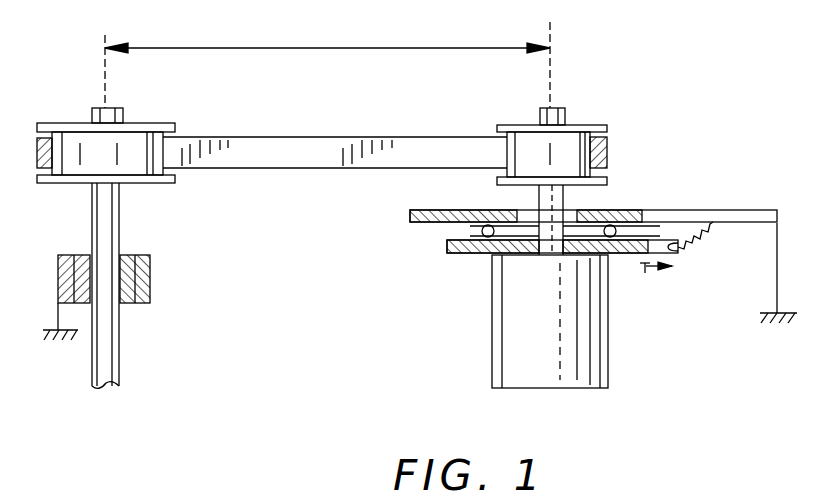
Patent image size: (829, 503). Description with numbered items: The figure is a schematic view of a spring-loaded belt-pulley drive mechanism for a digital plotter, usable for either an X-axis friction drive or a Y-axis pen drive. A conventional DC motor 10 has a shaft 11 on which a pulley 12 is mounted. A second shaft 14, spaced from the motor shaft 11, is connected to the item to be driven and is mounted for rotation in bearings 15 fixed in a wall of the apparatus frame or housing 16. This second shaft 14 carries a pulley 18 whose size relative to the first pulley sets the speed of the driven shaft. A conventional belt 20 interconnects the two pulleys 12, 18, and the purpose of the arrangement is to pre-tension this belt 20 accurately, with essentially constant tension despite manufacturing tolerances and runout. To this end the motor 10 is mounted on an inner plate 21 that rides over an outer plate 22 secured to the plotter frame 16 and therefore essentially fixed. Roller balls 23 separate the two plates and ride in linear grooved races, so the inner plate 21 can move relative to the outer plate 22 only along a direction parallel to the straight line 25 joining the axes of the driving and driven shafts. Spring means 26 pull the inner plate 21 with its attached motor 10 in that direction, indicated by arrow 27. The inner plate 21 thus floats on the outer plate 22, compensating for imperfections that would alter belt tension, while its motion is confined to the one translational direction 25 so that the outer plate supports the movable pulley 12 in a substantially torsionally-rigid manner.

The DC motor 10 is at (551, 350).
The motor shaft 11 is at (565, 197).
The pulley 12 is at (578, 125).
The second shaft 14 is at (120, 215).
The bearings 15 is at (150, 283).
The frame 16 is at (54, 333).
The pulley 18 is at (163, 125).
The belt 20 is at (343, 136).
The inner plate 21 is at (447, 253).
The outer plate 22 is at (713, 210).
The roller balls 23 is at (483, 225).
The line 25 is at (343, 46).
The spring means 26 is at (698, 238).
The arrow 27 is at (653, 292).